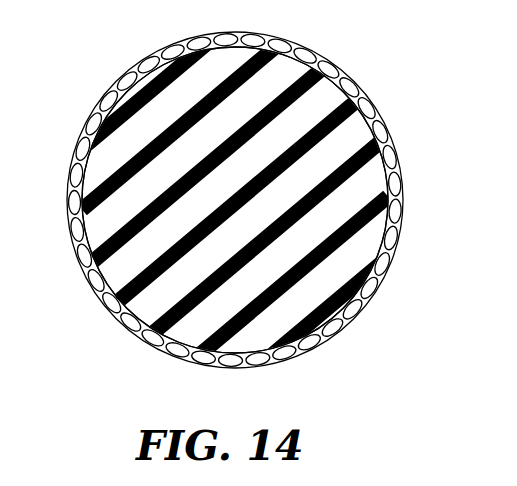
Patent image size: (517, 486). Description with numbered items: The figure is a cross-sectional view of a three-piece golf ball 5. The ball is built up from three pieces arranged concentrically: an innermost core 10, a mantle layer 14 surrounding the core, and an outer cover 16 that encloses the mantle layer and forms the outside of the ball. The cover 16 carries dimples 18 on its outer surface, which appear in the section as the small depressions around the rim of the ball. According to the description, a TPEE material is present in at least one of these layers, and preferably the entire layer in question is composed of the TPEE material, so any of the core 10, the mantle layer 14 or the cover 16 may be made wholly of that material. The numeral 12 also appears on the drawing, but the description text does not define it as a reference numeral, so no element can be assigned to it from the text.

The three-piece golf ball 5 is at (426, 69).
The core 10 is at (125, 252).
The inner sheath layer 12 is at (143, 342).
The mantle layer 14 is at (148, 90).
The cover 16 is at (397, 165).
The dimples 18 is at (331, 53).